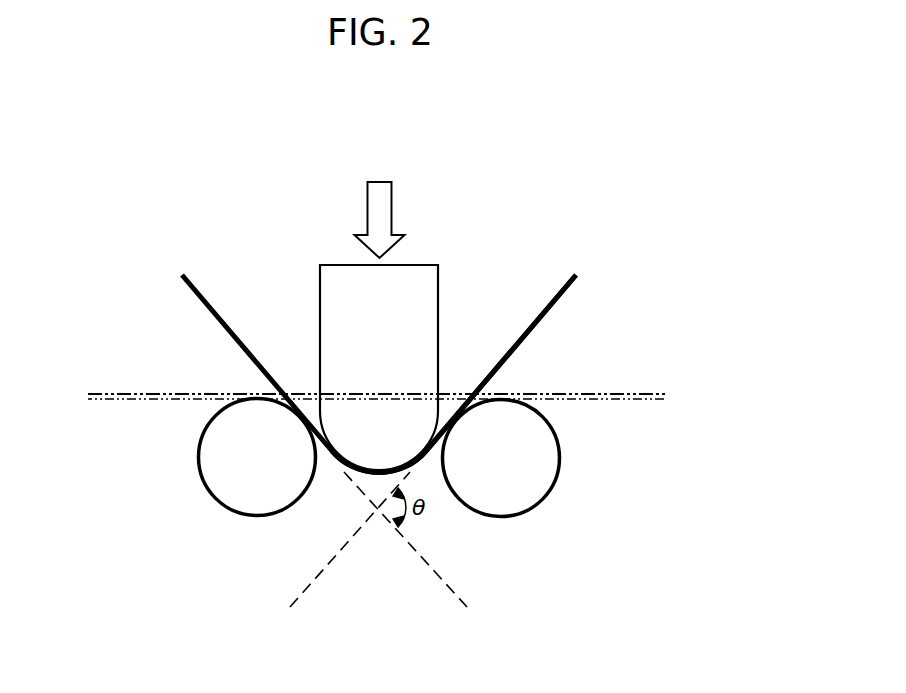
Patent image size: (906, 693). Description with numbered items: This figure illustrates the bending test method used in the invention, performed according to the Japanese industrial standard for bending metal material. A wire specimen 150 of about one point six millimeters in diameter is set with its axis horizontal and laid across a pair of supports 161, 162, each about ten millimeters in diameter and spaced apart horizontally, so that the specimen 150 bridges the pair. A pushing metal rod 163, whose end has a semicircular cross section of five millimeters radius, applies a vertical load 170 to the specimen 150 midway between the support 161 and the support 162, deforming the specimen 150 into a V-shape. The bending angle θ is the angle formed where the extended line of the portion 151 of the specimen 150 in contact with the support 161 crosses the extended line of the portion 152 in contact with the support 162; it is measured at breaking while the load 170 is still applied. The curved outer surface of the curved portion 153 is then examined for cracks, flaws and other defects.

The specimen 150 is at (583, 293).
The portion of the specimen in contact with support 151 is at (215, 327).
The portion of the specimen in contact with support 152 is at (537, 330).
The curved portion 153 is at (378, 475).
The support 161 is at (257, 500).
The support 162 is at (500, 500).
The pushing metal rod 163 is at (320, 283).
The load 170 is at (383, 212).